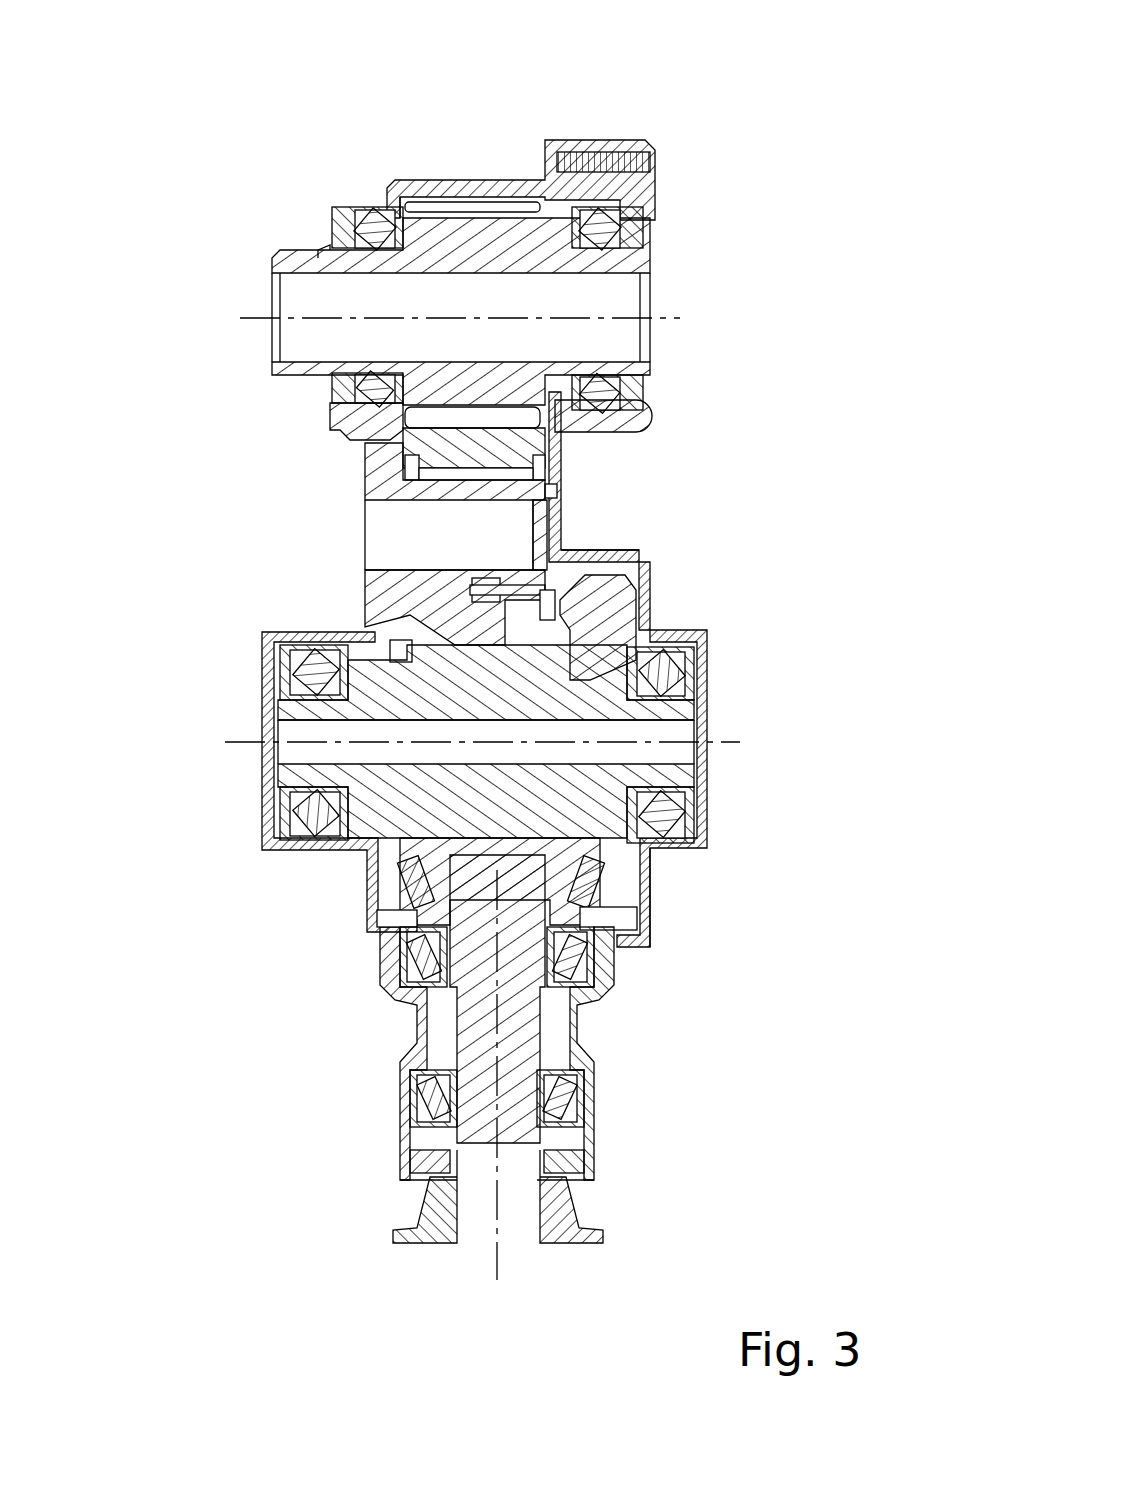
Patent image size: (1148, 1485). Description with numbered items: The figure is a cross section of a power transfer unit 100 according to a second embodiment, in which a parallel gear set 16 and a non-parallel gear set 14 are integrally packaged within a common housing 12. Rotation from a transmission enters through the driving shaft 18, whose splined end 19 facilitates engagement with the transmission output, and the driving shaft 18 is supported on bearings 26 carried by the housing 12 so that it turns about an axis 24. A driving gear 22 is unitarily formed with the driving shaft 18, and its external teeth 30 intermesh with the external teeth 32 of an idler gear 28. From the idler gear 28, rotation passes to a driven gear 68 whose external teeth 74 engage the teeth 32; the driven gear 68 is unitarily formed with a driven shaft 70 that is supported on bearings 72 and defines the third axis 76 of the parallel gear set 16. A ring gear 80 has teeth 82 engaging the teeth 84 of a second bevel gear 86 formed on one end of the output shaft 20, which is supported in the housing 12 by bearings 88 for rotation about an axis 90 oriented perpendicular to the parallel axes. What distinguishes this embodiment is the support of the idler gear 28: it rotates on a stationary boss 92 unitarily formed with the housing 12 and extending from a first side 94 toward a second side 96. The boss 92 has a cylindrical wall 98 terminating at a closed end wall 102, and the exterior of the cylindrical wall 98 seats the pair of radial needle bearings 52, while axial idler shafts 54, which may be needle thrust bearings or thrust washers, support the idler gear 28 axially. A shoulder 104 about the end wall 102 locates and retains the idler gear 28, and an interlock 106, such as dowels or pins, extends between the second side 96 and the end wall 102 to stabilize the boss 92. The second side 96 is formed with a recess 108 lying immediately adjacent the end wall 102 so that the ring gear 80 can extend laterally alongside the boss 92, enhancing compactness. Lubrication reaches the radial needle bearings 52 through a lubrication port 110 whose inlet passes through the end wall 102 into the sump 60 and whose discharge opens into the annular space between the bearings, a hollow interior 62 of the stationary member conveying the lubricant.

The power transfer unit 100 is at (826, 71).
The parallel gear set 16 is at (518, 154).
The bearings 26 is at (372, 195).
The driving gear 22 is at (430, 228).
The external teeth 30 is at (488, 205).
The splined end 19 is at (300, 248).
The axis 24 is at (660, 318).
The driving shaft 18 is at (298, 352).
The second side of the housing 96 is at (633, 418).
The external teeth 32 is at (420, 418).
The idler gear 28 is at (422, 445).
The axial idler shafts 54 is at (408, 472).
The shoulder 104 is at (560, 470).
The radial needle bearings 52 is at (553, 492).
The interlock 106 is at (555, 522).
The end wall 102 is at (570, 538).
The recess 108 is at (600, 560).
The hollow interior 62 is at (470, 532).
The boss 92 is at (408, 502).
The cylindrical wall 98 is at (430, 568).
The first side of the housing 94 is at (378, 602).
The sump 60 is at (565, 590).
The bearings 72 is at (300, 668).
The driven gear 68 is at (425, 683).
The third axis 76 is at (262, 728).
The lubrication port 110 is at (705, 735).
The driven shaft 70 is at (293, 770).
The external teeth 74 is at (427, 850).
The teeth 84 is at (415, 885).
The ring gear 80 is at (652, 867).
The teeth 82 is at (640, 900).
The second bevel gear 86 is at (395, 932).
The bearings 88 is at (396, 958).
The non-parallel gear set 14 is at (644, 1052).
The housing 12 is at (432, 1045).
The output shaft 20 is at (507, 1047).
The axis 90 is at (497, 1243).